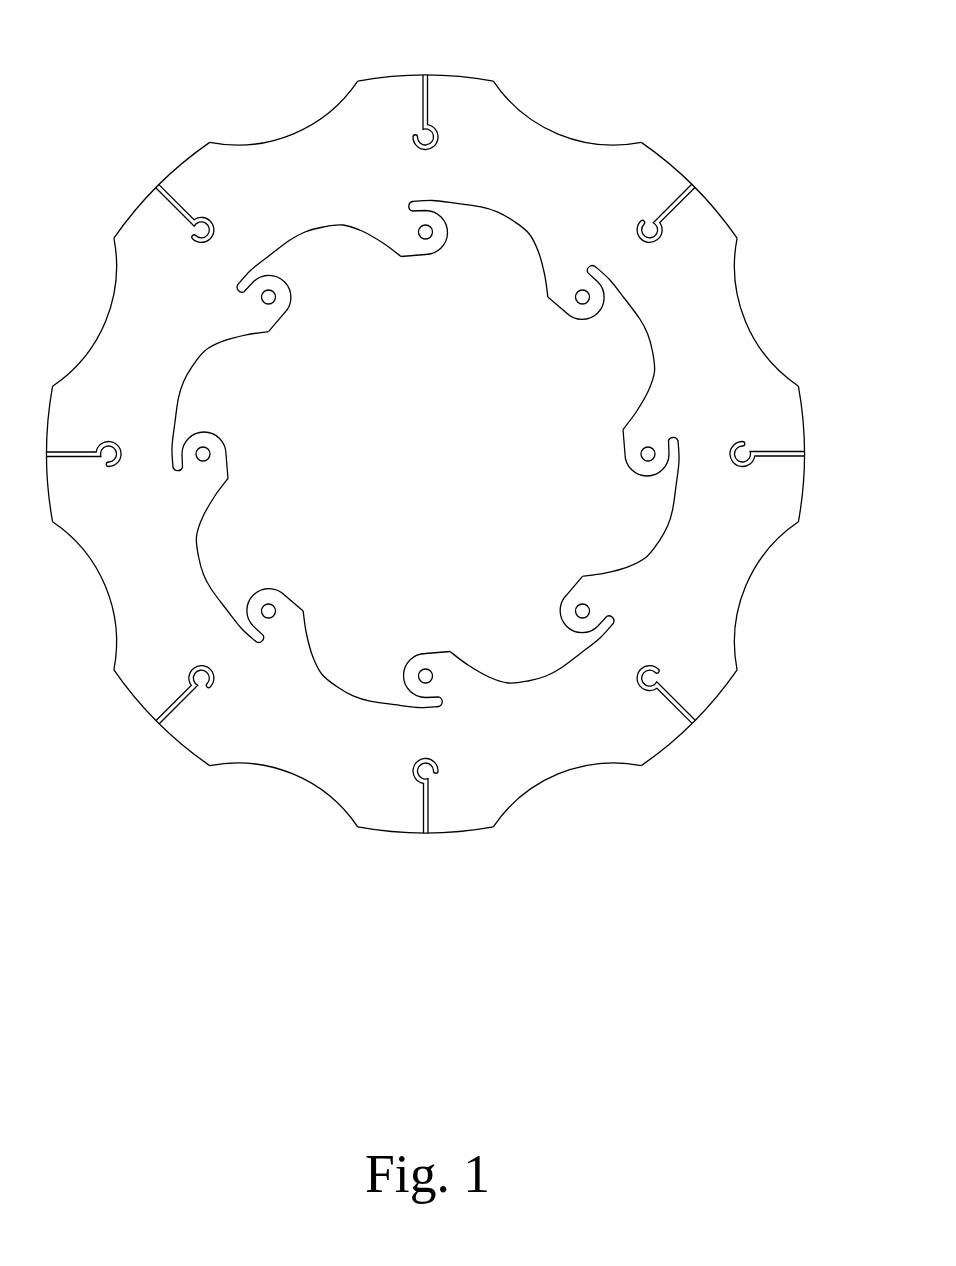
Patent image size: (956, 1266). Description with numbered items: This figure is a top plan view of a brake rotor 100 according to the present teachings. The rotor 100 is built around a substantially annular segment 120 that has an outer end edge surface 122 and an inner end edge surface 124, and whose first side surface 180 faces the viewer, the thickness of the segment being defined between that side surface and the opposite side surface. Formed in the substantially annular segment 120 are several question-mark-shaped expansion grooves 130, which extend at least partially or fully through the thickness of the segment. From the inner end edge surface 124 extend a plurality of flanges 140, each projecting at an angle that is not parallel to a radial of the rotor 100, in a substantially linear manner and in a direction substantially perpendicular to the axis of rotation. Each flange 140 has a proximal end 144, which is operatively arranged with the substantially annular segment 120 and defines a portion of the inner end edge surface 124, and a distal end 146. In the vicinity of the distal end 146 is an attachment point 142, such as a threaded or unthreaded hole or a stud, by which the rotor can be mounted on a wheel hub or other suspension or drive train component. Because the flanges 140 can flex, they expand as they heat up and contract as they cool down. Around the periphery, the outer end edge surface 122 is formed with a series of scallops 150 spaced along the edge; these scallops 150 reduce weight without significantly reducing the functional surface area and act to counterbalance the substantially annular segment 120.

The brake rotor 100 is at (705, 83).
The substantially annular segment 120 is at (722, 342).
The outer end edge surface 122 is at (460, 833).
The inner end edge surface 124 is at (303, 233).
The question-mark-shaped expansion groove 130 is at (689, 726).
The flange 140 is at (546, 277).
The attachment point 142 is at (203, 454).
The proximal end 144 is at (494, 673).
The distal end 146 is at (418, 655).
The scallop 150 is at (287, 777).
The first side surface 180 is at (322, 143).